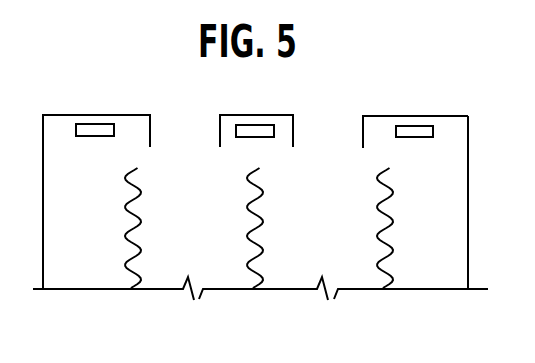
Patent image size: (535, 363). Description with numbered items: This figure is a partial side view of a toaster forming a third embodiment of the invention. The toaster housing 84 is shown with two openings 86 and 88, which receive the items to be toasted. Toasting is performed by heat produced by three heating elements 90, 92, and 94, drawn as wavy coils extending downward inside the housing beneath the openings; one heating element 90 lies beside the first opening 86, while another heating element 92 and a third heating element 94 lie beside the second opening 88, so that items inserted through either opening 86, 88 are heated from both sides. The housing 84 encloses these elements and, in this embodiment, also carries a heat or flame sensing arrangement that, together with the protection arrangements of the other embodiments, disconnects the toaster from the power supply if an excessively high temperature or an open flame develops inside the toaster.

The toaster housing 84 is at (476, 139).
The opening 86 is at (189, 111).
The opening 88 is at (336, 116).
The heating element 90 is at (160, 221).
The heating element 92 is at (274, 222).
The heating element 94 is at (404, 221).